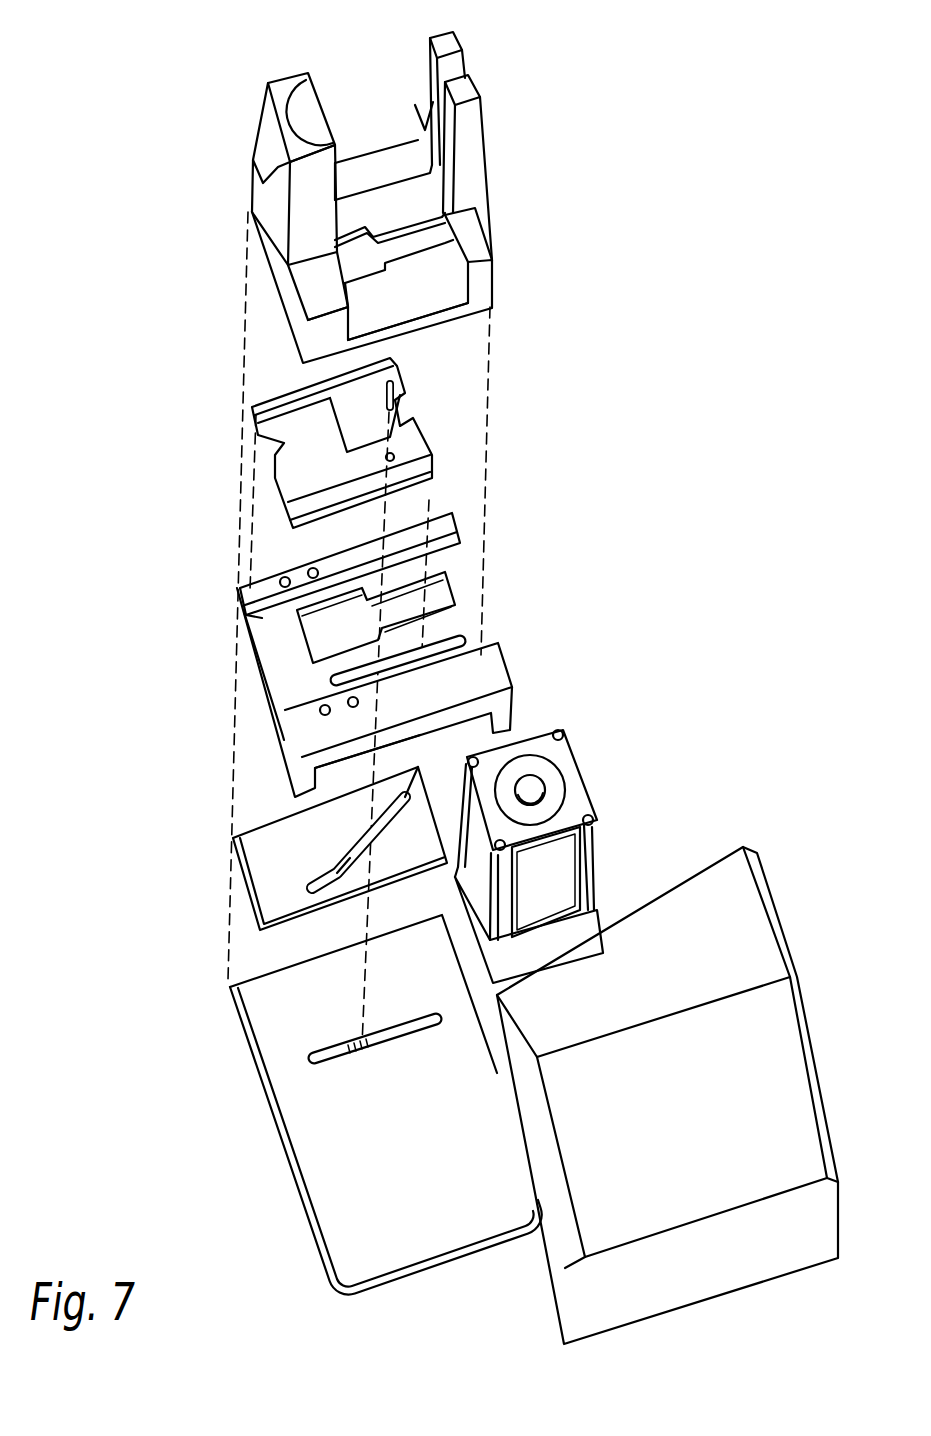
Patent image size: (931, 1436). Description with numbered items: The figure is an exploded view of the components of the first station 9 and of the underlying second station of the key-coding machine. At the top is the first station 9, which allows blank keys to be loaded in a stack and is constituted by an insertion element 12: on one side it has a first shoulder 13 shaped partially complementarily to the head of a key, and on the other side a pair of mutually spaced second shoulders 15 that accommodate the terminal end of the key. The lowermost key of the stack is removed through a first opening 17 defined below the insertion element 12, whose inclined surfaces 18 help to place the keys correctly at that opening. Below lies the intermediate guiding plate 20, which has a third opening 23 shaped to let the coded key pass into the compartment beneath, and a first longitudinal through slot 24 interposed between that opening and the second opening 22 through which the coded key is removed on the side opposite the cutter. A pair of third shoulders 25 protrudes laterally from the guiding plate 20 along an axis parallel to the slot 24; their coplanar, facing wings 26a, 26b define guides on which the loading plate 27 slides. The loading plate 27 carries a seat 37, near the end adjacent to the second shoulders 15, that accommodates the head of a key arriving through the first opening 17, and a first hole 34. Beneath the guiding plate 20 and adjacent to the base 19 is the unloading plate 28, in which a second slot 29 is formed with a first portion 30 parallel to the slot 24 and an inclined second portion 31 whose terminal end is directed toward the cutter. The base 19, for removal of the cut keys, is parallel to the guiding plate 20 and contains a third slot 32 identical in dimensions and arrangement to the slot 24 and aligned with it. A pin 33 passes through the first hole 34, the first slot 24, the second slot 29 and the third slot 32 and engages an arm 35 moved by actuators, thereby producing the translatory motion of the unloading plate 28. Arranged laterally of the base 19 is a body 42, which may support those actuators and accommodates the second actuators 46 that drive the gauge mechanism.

The first station 9 is at (398, 188).
The insertion element 12 is at (473, 253).
The first shoulder 13 is at (277, 168).
The second shoulders 15 is at (472, 37).
The first opening 17 is at (346, 266).
The inclined surfaces 18 is at (408, 262).
The base 19 is at (333, 1105).
The intermediate guiding plate 20 is at (322, 657).
The second opening 22 is at (354, 774).
The third opening 23 is at (327, 620).
The first longitudinal through slot 24 is at (465, 642).
The third shoulders 25 is at (311, 688).
The wing 26a is at (242, 585).
The wing 26b is at (280, 723).
The loading plate 27 is at (370, 428).
The unloading plate 28 is at (322, 800).
The second slot 29 is at (353, 851).
The first portion 30 is at (320, 893).
The second portion 31 is at (420, 766).
The third slot 32 is at (317, 1041).
The pin 33 is at (396, 408).
The first hole 34 is at (394, 455).
The arm 35 is at (352, 1053).
The seat 37 is at (352, 412).
The body 42 is at (750, 940).
The second actuators 46 is at (620, 802).